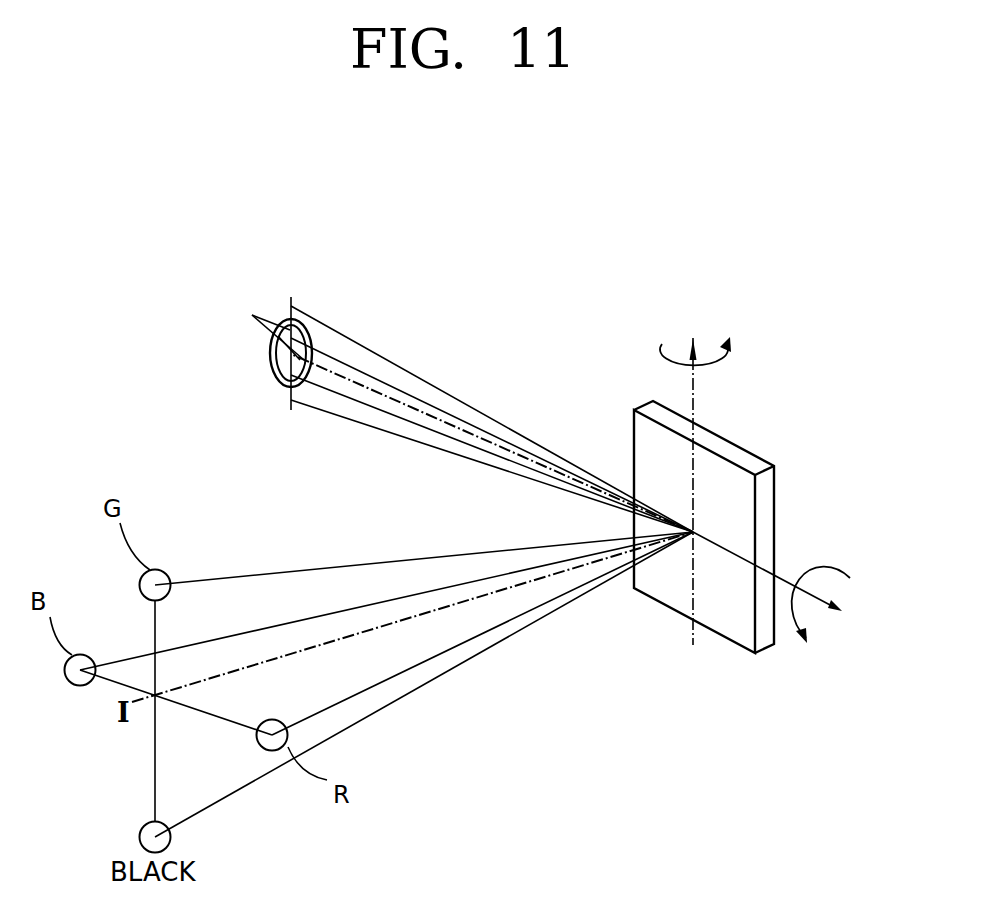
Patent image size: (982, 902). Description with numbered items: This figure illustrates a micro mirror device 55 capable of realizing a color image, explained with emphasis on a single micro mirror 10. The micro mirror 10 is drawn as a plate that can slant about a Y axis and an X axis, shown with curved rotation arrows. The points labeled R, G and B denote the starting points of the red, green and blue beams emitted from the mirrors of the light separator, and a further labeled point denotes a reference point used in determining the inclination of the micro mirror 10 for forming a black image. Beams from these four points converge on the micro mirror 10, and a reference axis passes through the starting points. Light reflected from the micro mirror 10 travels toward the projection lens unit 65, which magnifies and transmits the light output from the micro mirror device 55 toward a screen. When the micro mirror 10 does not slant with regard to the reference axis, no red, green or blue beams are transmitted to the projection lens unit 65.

The micro mirror 10 is at (768, 518).
The micro mirror device 55 is at (751, 414).
The projection lens unit 65 is at (278, 385).